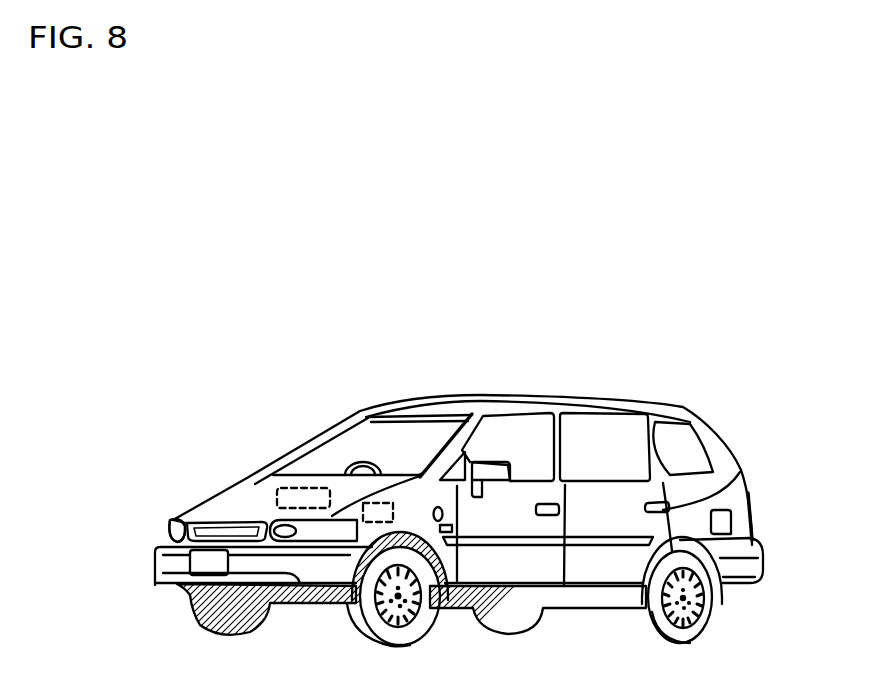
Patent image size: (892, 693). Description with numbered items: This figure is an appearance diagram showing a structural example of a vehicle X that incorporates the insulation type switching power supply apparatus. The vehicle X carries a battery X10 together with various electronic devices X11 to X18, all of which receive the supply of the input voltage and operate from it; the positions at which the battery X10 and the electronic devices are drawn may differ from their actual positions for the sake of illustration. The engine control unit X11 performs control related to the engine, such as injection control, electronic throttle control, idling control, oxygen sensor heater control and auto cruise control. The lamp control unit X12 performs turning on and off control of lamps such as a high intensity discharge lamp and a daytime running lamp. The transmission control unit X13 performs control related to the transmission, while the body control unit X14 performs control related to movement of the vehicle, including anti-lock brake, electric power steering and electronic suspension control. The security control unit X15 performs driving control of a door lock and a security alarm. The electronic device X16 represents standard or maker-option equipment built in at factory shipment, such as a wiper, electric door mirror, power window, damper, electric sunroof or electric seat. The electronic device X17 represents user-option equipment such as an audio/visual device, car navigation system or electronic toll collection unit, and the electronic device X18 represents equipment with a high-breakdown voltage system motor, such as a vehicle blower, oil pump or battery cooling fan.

The vehicle X is at (134, 351).
The battery X10 is at (395, 512).
The engine control unit X11 is at (250, 499).
The lamp control unit X12 is at (172, 523).
The transmission control unit X13 is at (340, 612).
The body control unit X14 is at (624, 612).
The security control unit X15 is at (717, 497).
The electronic device X16 is at (610, 428).
The electronic device X17 is at (393, 463).
The electronic device X18 is at (284, 494).